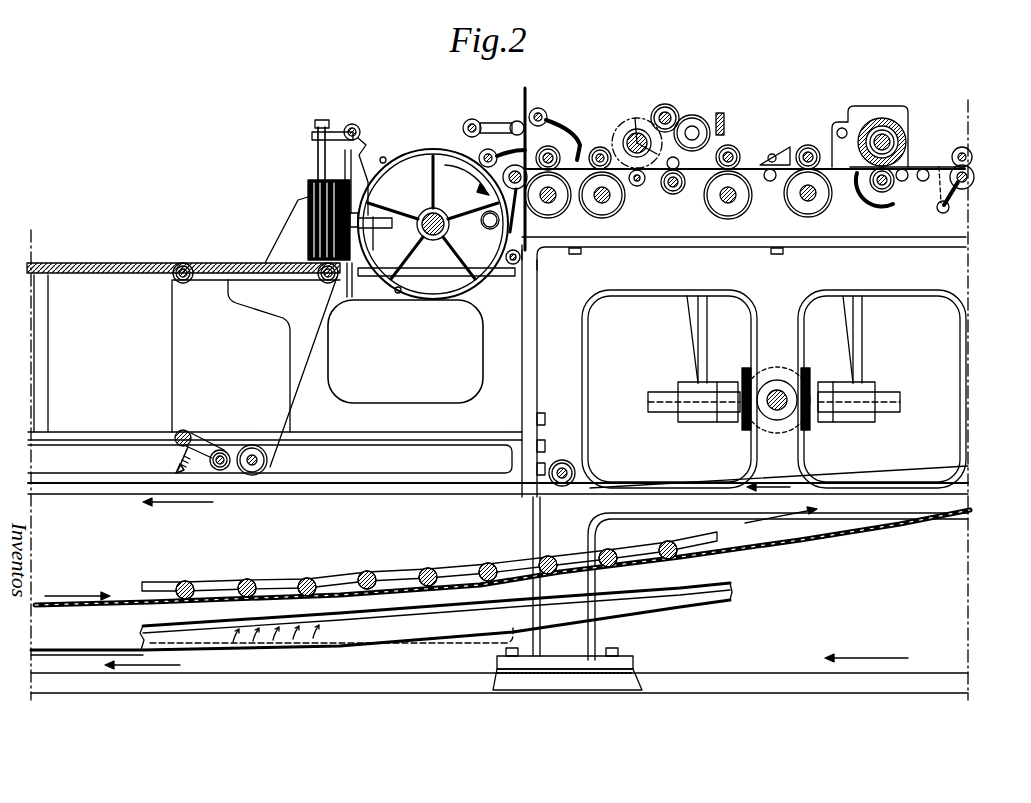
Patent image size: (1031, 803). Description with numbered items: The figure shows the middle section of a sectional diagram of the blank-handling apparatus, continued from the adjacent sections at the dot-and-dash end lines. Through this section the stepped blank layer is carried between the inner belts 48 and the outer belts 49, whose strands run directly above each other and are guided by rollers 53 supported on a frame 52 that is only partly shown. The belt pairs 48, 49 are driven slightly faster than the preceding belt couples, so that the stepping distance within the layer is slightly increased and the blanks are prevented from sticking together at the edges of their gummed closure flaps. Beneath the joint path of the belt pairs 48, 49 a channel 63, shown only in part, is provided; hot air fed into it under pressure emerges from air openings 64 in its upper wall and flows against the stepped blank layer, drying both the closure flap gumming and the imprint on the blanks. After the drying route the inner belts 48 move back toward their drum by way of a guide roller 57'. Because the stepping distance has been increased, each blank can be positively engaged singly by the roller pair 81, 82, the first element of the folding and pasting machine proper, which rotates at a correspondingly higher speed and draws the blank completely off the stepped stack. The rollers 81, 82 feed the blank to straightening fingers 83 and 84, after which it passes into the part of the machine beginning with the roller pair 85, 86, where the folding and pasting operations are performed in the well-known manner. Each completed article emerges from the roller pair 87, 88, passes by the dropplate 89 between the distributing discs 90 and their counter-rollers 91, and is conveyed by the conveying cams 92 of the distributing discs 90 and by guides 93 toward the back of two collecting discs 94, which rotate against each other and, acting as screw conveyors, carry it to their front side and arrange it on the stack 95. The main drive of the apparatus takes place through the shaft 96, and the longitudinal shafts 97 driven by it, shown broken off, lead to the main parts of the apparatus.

The inner belts 48 is at (137, 497).
The outer belts 49 is at (85, 608).
The frame 52 is at (392, 581).
The rollers 53 is at (482, 567).
The guide roller 57' is at (565, 459).
The channel 63 is at (403, 636).
The air openings 64 is at (385, 617).
The roller 81 is at (958, 190).
The roller 82 is at (957, 150).
The straightening finger 83 is at (946, 168).
The straightening finger 84 is at (904, 165).
The roller 85 is at (893, 186).
The roller 86 is at (882, 118).
The roller 87 is at (590, 208).
The roller 88 is at (481, 189).
The dropplate 89 is at (555, 207).
The distributing discs 90 is at (433, 154).
The counter-rollers 91 is at (524, 238).
The conveying cams 92 is at (385, 157).
The guides 93 is at (438, 300).
The collecting discs 94 is at (350, 297).
The stack 95 is at (313, 182).
The shaft 96 is at (777, 418).
The longitudinal shafts 97 is at (662, 404).